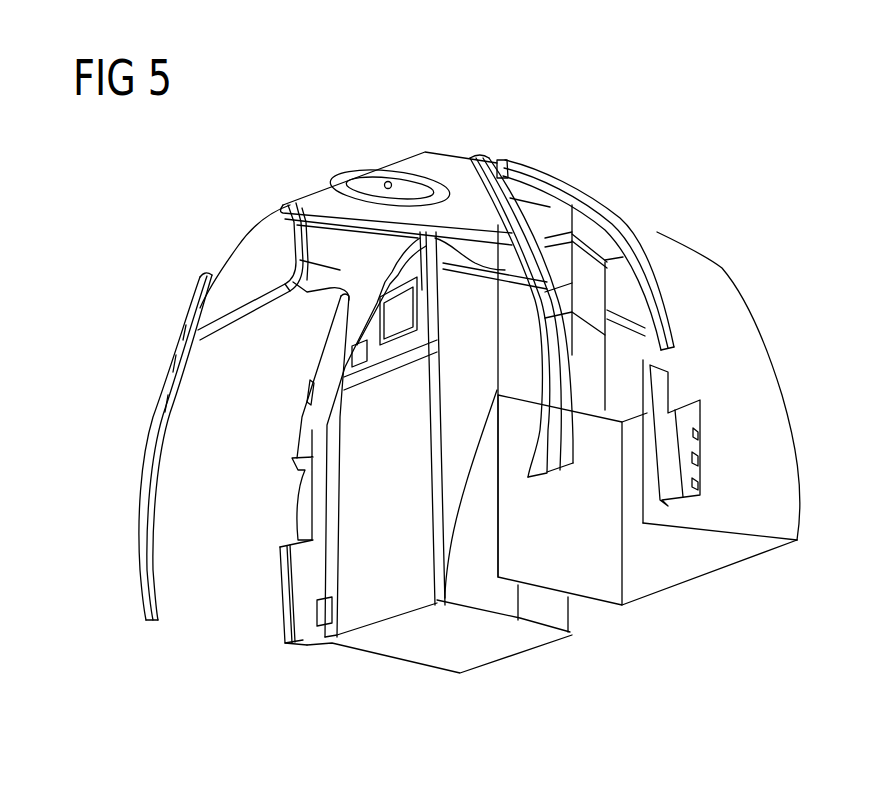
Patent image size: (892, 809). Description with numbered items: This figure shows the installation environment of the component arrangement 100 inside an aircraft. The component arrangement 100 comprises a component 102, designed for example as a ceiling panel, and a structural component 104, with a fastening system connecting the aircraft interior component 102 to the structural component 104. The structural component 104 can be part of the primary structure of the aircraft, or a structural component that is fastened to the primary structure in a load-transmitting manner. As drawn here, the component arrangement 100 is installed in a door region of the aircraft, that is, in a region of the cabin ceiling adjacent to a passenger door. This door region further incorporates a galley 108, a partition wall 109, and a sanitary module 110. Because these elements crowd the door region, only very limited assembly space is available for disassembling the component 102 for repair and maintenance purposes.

The component arrangement 100 is at (491, 145).
The component 102 is at (305, 195).
The structural component 104 is at (200, 452).
The galley 108 is at (595, 283).
The partition wall 109 is at (373, 332).
The sanitary module 110 is at (478, 512).